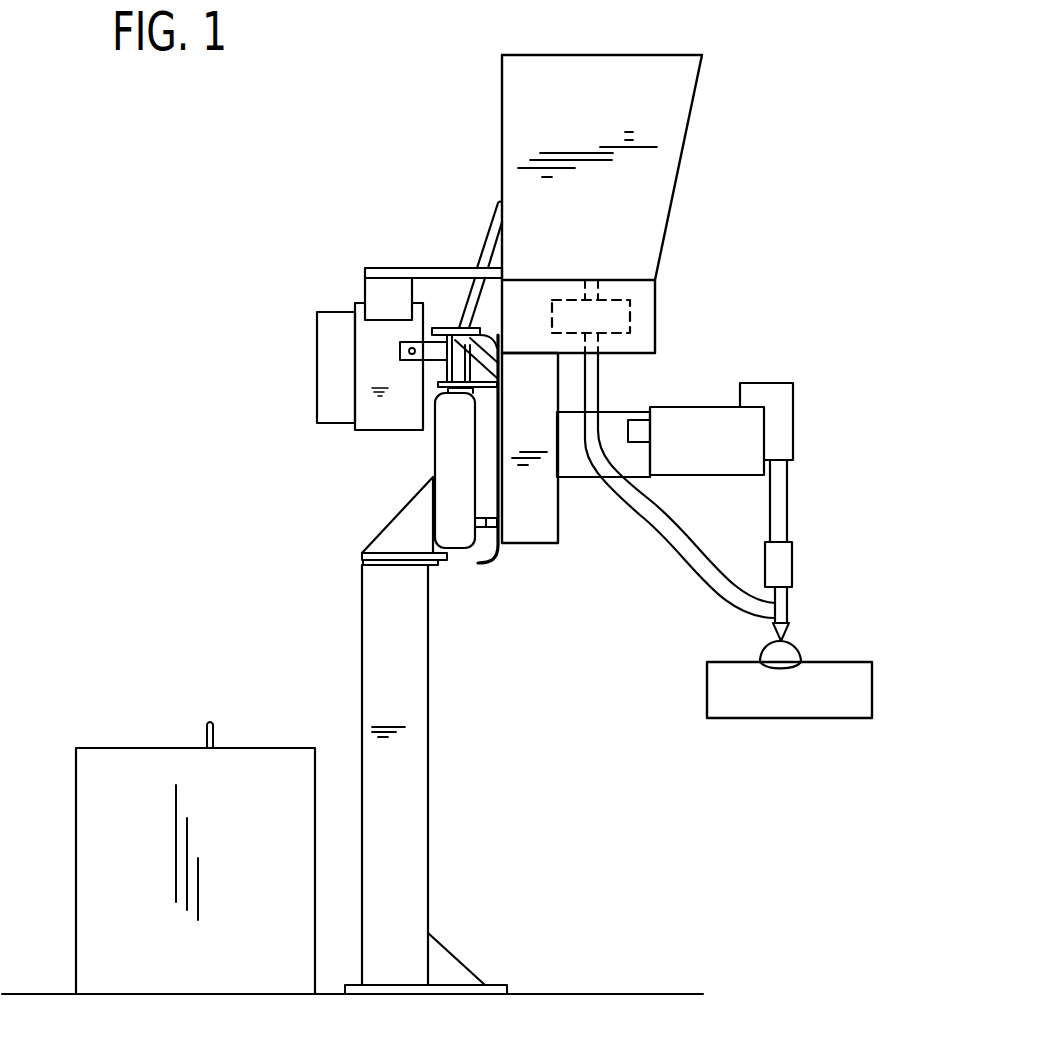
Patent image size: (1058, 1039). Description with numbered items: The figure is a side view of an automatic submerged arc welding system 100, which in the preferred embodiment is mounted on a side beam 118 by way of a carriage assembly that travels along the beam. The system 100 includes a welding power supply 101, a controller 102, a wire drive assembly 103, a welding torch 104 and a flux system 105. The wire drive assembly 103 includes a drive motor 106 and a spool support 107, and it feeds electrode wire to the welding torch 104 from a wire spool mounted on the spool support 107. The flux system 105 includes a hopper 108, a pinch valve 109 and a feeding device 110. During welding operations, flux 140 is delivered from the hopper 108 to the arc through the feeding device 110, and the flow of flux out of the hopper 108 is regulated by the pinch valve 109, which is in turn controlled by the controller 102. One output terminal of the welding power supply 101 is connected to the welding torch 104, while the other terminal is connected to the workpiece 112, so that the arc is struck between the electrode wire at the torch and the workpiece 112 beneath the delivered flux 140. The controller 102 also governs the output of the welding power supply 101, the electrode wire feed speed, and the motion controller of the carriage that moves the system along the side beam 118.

The submerged arc welding system 100 is at (187, 192).
The welding power supply 101 is at (137, 744).
The controller 102 is at (523, 545).
The wire drive assembly 103 is at (682, 355).
The welding torch 104 is at (788, 496).
The flux system 105 is at (690, 206).
The drive motor 106 is at (698, 405).
The spool support 107 is at (483, 236).
The hopper 108 is at (694, 102).
The pinch valve 109 is at (632, 300).
The feeding device 110 is at (647, 557).
The workpiece 112 is at (873, 687).
The side beam 118 is at (353, 555).
The flux 140 is at (793, 645).